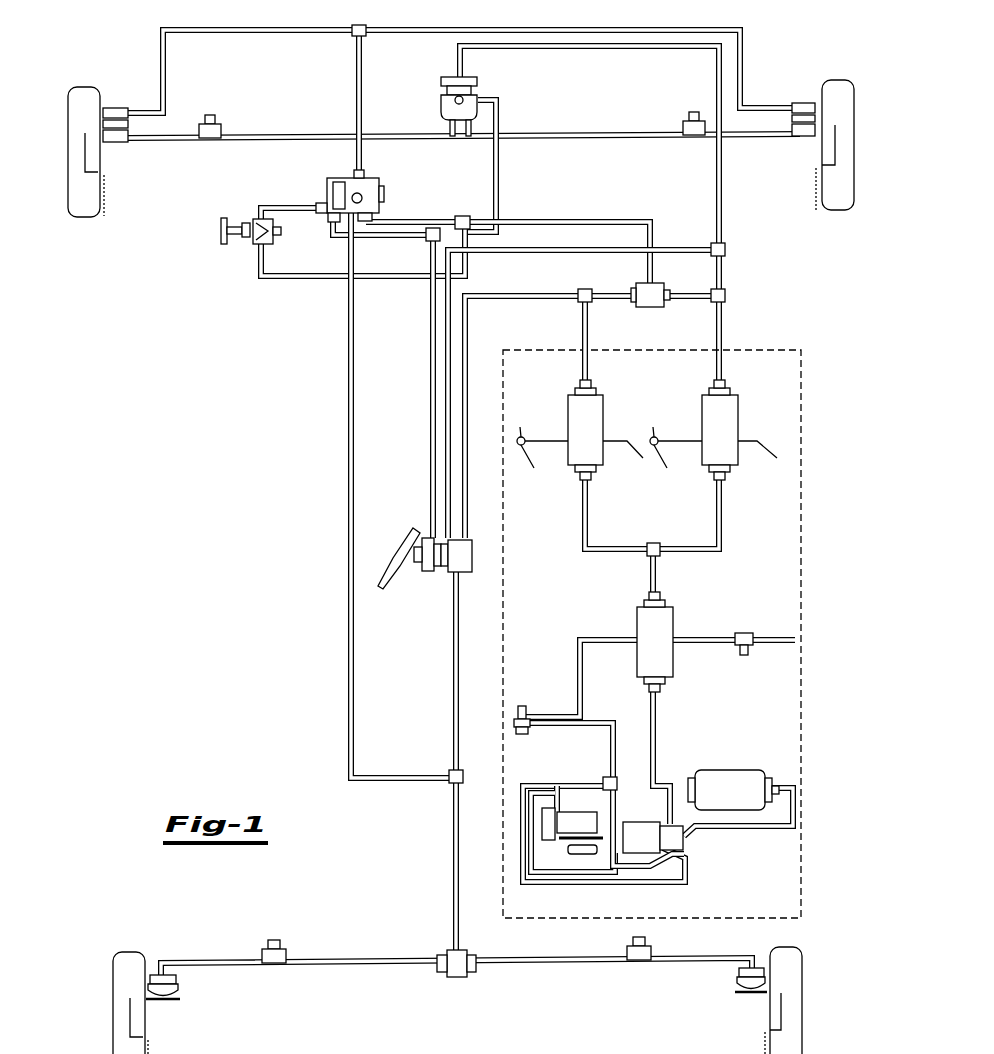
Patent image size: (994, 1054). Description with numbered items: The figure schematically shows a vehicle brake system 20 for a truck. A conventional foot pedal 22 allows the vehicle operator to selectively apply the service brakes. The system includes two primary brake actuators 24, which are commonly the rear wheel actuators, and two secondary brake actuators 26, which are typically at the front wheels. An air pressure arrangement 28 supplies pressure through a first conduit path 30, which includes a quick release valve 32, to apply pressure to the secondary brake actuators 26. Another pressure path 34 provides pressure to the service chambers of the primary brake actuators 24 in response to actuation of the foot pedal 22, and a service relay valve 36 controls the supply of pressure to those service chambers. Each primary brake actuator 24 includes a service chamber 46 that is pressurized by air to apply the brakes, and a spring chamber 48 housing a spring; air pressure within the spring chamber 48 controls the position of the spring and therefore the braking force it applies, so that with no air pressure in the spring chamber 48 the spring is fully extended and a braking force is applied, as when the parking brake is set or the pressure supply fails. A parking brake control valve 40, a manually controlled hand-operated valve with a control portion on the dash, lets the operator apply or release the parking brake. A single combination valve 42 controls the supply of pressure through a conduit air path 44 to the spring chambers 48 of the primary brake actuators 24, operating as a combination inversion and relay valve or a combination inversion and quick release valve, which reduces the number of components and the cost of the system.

The vehicle brake system 20 is at (325, 14).
The foot pedal 22 is at (397, 553).
The primary brake actuators 24 is at (98, 76).
The secondary brake actuators 26 is at (178, 1010).
The air pressure arrangement 28 is at (806, 418).
The first conduit path 30 is at (349, 352).
The quick release valve 32 is at (450, 950).
The pressure path 34 is at (498, 183).
The service relay valve 36 is at (478, 79).
The parking brake control valve 40 is at (220, 232).
The combination valve 42 is at (318, 194).
The conduit air path 44 is at (162, 53).
The service chamber 46 is at (807, 137).
The spring chamber 48 is at (813, 102).